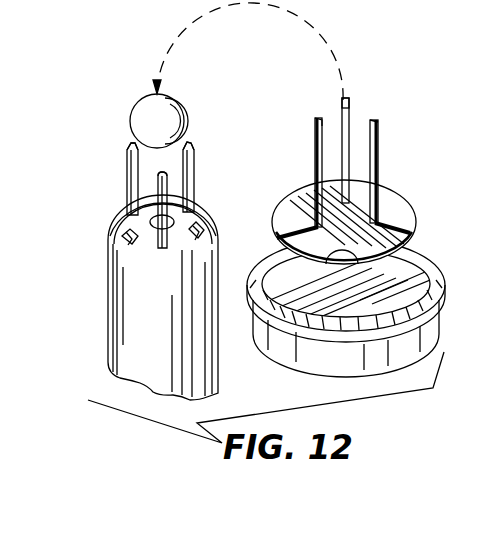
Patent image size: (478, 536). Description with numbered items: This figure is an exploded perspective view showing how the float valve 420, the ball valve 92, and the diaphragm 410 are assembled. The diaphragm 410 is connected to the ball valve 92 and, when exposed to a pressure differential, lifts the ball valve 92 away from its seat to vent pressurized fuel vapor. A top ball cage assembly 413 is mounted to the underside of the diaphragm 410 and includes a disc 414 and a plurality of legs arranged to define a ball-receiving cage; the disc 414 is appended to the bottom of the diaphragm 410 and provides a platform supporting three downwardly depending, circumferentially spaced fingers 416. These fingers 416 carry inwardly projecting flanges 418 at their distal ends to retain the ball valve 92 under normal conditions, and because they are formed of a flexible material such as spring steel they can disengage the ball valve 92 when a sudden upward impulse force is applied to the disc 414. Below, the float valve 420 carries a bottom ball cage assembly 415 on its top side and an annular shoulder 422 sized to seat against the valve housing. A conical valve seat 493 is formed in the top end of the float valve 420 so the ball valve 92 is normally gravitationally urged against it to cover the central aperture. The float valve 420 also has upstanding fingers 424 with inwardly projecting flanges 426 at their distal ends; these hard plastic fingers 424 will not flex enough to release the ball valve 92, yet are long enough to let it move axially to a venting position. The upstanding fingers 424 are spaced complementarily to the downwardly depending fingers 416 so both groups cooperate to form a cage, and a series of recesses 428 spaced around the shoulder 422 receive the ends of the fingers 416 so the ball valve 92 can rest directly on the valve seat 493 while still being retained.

The ball valve 92 is at (170, 130).
The diaphragm 410 is at (373, 306).
The top ball cage assembly 413 is at (417, 101).
The disc 414 is at (344, 229).
The bottom ball cage assembly 415 is at (108, 125).
The downwardly depending fingers 416 is at (316, 160).
The inwardly projecting flanges 418 is at (326, 124).
The float valve 420 is at (140, 330).
The annular shoulder 422 is at (118, 208).
The upstanding fingers 424 is at (127, 177).
The inwardly projecting flanges 426 is at (127, 149).
The recesses 428 is at (125, 244).
The conical valve seat 493 is at (150, 219).